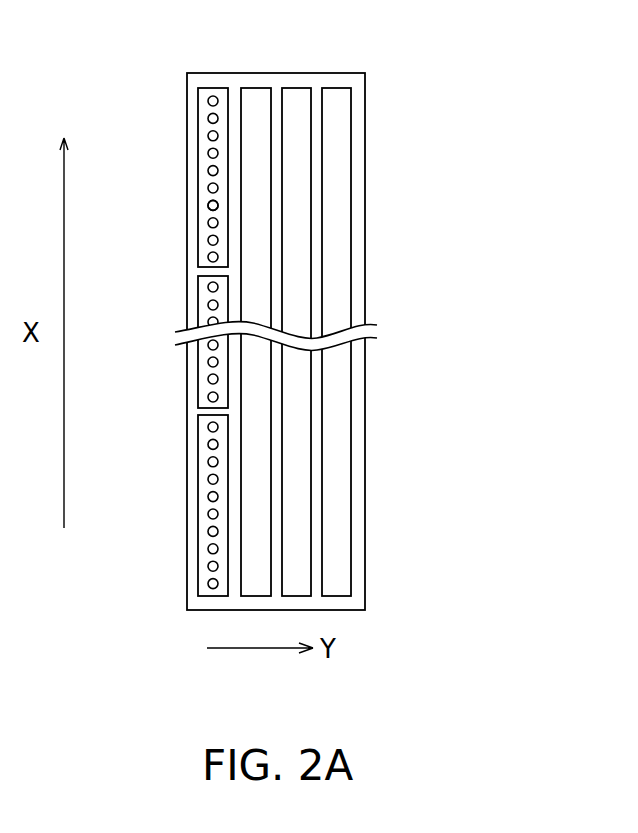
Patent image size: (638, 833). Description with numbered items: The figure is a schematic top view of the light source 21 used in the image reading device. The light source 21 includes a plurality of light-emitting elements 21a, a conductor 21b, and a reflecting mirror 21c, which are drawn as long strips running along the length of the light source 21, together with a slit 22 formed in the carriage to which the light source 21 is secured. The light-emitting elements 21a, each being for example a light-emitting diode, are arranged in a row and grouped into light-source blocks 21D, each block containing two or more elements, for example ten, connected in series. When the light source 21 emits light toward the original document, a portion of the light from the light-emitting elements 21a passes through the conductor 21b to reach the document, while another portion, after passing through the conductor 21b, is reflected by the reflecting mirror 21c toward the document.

The light source 21 is at (428, 121).
The light-emitting element 21a is at (209, 101).
The conductor 21b is at (250, 92).
The slit 22 is at (298, 93).
The reflecting mirror 21c is at (337, 92).
The light-source block 21D is at (199, 213).